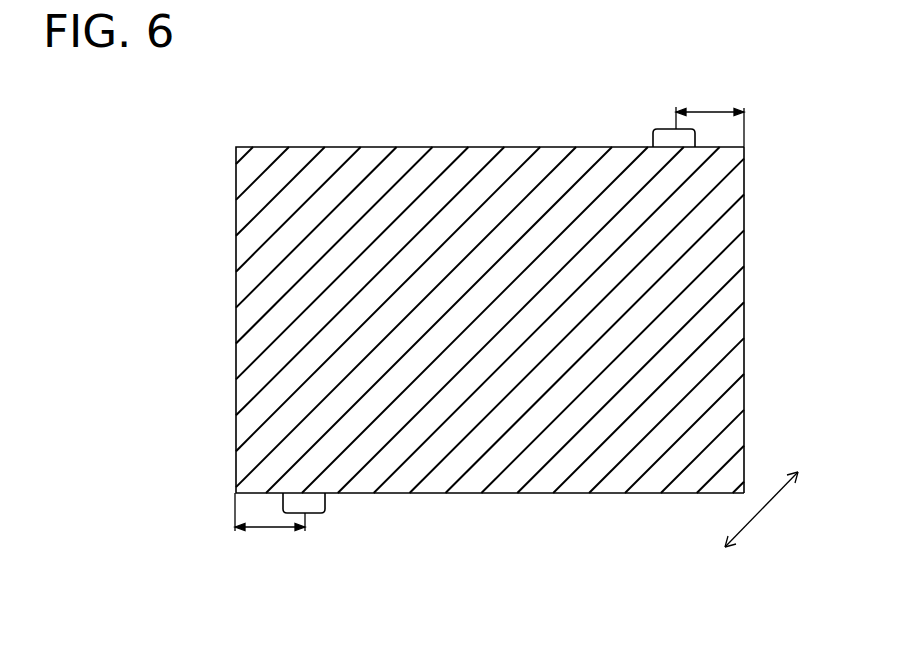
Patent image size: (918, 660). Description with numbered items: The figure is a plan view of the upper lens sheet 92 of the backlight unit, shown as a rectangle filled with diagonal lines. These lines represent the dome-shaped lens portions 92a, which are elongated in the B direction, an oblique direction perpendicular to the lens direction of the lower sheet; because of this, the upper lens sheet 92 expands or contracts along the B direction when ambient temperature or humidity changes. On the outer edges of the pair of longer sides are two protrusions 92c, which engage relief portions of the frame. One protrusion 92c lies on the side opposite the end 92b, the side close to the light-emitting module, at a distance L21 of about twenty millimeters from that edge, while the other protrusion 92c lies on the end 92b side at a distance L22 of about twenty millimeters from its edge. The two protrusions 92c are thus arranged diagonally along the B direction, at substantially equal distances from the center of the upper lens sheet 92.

The upper lens sheet 92 is at (497, 286).
The lens portions 92a is at (340, 157).
The end 92b is at (733, 323).
The protrusions 92c is at (653, 140).
The distance L21 is at (270, 527).
The distance L22 is at (710, 114).
The B direction B is at (761, 509).